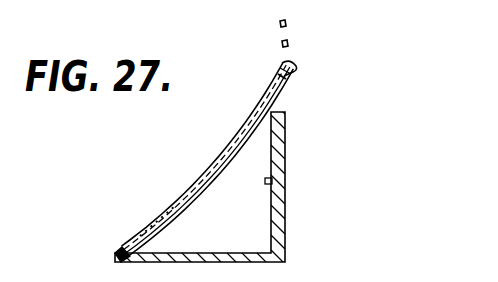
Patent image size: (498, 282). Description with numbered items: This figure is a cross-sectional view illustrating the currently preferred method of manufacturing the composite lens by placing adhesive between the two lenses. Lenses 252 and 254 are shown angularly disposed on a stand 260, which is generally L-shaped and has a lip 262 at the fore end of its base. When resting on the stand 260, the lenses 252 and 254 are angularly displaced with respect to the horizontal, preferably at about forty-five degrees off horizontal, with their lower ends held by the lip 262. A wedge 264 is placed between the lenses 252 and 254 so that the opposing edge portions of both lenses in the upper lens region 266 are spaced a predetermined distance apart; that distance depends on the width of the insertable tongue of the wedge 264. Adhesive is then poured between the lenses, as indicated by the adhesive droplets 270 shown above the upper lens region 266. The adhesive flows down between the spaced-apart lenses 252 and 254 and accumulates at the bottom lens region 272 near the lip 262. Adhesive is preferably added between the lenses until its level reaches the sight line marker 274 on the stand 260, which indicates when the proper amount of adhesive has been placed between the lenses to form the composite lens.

The lens 252 is at (250, 142).
The lens 254 is at (212, 167).
The stand 260 is at (286, 218).
The lip 262 is at (121, 251).
The wedge 264 is at (291, 68).
The upper lens region 266 is at (266, 69).
The adhesive droplets 270 is at (281, 43).
The bottom lens region 272 is at (172, 210).
The sight line marker 274 is at (267, 185).